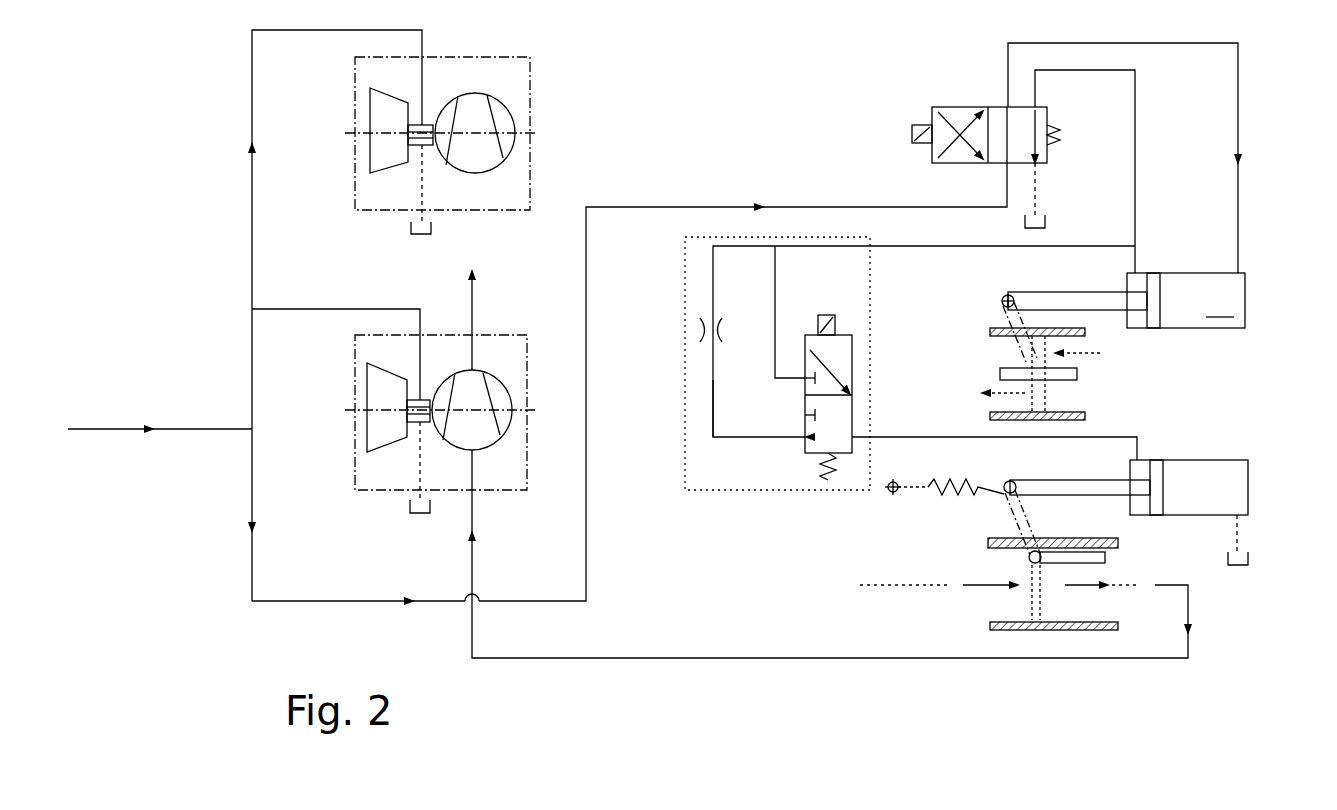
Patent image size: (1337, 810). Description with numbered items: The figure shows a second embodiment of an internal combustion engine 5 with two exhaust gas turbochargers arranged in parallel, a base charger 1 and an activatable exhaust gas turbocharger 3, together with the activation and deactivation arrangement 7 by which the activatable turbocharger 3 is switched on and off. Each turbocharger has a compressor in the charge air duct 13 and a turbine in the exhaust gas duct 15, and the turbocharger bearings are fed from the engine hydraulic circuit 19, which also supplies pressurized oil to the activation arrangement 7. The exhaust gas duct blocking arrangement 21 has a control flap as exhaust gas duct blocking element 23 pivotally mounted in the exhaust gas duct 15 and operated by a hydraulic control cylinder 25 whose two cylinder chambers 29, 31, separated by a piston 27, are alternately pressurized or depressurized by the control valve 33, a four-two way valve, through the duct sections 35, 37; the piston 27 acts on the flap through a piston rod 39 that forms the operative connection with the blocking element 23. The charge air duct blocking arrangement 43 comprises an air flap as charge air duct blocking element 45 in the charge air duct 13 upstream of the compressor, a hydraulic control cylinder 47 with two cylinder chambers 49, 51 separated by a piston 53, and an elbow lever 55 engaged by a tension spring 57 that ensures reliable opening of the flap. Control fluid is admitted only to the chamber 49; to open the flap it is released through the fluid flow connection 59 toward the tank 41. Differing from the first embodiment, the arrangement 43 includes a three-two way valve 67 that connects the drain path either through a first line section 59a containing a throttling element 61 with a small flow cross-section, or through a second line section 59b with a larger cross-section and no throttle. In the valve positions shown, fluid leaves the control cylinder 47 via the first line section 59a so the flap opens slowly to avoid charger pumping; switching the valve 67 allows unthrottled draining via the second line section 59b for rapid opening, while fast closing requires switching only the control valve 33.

The exhaust gas turbocharger 1 is at (456, 119).
The activatable exhaust gas turbocharger 3 is at (431, 433).
The internal combustion engine 5 is at (750, 90).
The activation and deactivation arrangement 7 is at (878, 181).
The charge air duct 13 is at (775, 658).
The exhaust gas duct 15 is at (1072, 398).
The hydraulic circuit 19 is at (333, 602).
The exhaust gas duct blocking arrangement 21 is at (1118, 321).
The exhaust gas duct blocking element 23 is at (1013, 376).
The control cylinder 25 is at (1216, 288).
The piston 27 is at (1153, 273).
The cylinder chamber 29 is at (1251, 276).
The cylinder chamber 31 is at (1136, 318).
The control valve 33 is at (937, 93).
The duct section 35 is at (1135, 182).
The duct section 37 is at (1238, 150).
The piston rod 39 is at (1040, 297).
The tank 41 is at (408, 235).
The charge air duct blocking arrangement 43 is at (879, 412).
The charge air duct blocking element 45 is at (1105, 556).
The hydraulic control cylinder 47 is at (1159, 484).
The cylinder chamber 49 is at (1136, 472).
The cylinder chamber 51 is at (1240, 505).
The piston 53 is at (1158, 470).
The elbow lever 55 is at (1058, 488).
The tension spring 57 is at (937, 495).
The drain line 59 is at (912, 247).
The first line section 59a is at (713, 420).
The second line section 59b is at (777, 302).
The throttling element 61 is at (696, 339).
The valve 67 is at (859, 389).